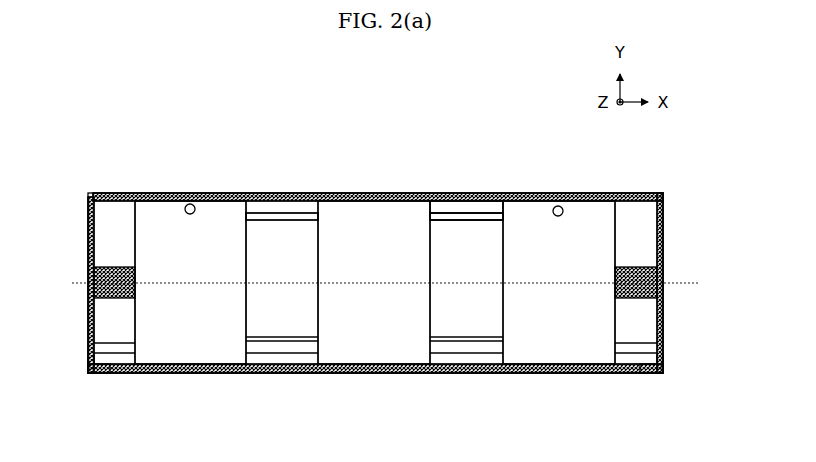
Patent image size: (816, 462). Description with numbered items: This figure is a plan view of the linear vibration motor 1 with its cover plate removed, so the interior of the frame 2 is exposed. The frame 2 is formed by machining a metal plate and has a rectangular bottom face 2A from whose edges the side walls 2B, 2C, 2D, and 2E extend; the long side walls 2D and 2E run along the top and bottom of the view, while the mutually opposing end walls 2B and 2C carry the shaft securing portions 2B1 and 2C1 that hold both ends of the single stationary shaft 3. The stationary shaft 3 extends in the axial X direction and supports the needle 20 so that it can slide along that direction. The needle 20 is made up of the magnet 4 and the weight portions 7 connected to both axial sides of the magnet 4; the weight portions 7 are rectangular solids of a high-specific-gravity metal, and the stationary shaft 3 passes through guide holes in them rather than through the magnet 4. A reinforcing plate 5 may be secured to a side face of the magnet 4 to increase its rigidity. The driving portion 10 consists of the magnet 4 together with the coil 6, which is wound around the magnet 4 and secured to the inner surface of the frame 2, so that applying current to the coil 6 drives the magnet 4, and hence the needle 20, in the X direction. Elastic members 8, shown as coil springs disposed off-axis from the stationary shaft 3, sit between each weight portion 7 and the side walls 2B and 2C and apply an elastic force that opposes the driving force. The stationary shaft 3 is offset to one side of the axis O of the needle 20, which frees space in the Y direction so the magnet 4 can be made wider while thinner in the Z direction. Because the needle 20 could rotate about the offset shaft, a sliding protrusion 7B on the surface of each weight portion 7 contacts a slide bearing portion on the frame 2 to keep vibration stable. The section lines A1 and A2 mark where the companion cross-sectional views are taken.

The linear vibration motor 1 is at (641, 166).
The frame 2 is at (658, 198).
The rectangular bottom face 2A is at (628, 210).
The side wall 2B is at (87, 233).
The shaft securing portion 2B1 is at (104, 353).
The side wall 2C is at (662, 232).
The shaft securing portion 2C1 is at (657, 361).
The side wall 2D is at (463, 373).
The side wall 2E is at (452, 193).
The stationary shaft 3 is at (270, 348).
The magnet 4 is at (278, 232).
The driving portion 10 is at (282, 216).
The needle 20 is at (466, 216).
The reinforcing plate 5 is at (485, 213).
The coil 6 is at (340, 360).
The weight portion 7 is at (138, 198).
The sliding protrusion 7B is at (194, 201).
The elastic member 8 is at (99, 298).
The axis of the needle O is at (680, 283).
The section A1- A1 is at (380, 164).
The section A2- A2 is at (193, 164).